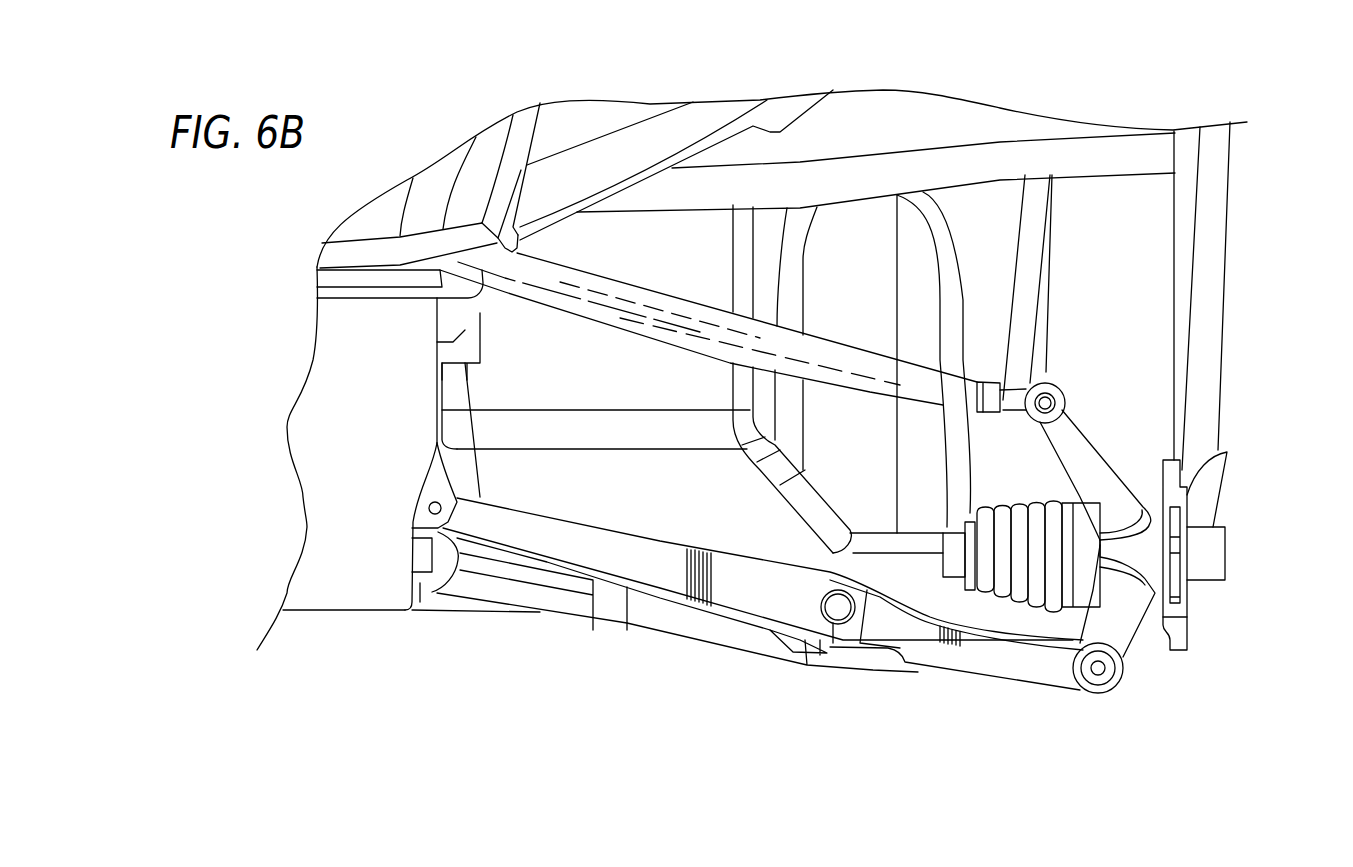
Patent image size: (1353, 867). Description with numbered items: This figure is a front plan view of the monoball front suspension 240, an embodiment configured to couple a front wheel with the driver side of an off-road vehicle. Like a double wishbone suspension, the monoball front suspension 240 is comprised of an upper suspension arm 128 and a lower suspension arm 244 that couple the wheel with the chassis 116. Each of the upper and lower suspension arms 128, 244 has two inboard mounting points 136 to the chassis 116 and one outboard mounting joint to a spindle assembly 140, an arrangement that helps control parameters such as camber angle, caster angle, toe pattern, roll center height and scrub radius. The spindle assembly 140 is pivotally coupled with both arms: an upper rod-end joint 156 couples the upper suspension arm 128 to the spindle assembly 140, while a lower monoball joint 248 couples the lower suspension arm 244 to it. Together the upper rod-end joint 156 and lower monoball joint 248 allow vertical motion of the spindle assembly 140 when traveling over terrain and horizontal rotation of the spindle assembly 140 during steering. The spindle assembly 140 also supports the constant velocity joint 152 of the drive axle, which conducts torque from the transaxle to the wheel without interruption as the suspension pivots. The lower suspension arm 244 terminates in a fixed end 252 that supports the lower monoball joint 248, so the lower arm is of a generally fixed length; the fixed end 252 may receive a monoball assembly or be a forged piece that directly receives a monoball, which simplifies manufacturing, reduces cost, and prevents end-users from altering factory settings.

The chassis 116 is at (329, 599).
The upper suspension arm 128 is at (867, 361).
The inboard mounting points 136 is at (440, 522).
The spindle assembly 140 is at (1077, 435).
The constant velocity (CV) joint 152 is at (973, 522).
The upper rod-end joint 156 is at (1055, 370).
The monoball front suspension 240 is at (1167, 77).
The lower suspension arm 244 is at (605, 602).
The lower monoball joint 248 is at (1113, 707).
The fixed end 252 is at (908, 630).